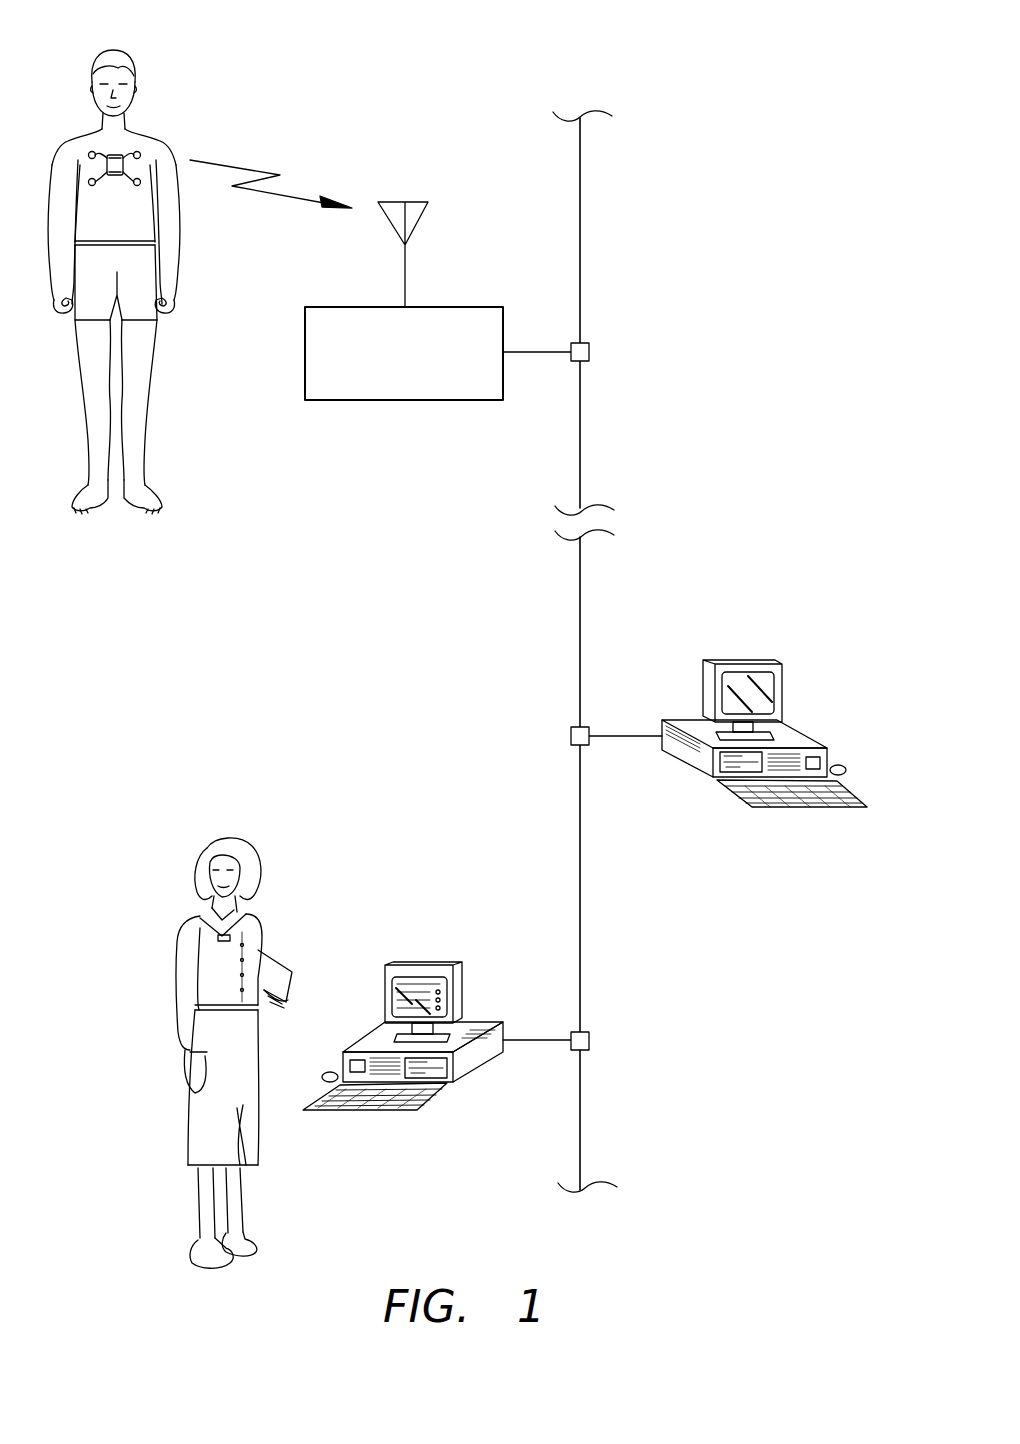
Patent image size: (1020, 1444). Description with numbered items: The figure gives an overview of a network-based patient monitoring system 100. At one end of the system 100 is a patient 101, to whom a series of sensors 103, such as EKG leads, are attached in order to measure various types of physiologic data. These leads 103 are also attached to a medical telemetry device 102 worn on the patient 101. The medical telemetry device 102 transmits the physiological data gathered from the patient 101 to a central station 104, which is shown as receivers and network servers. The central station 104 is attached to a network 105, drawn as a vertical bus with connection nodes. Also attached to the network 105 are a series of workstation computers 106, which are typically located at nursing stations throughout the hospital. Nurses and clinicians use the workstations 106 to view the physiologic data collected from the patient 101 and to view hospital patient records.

The network-based patient monitoring system 100 is at (378, 97).
The patient 101 is at (100, 56).
The medical telemetry device 102 is at (114, 155).
The sensors 103 is at (139, 154).
The central station 104 is at (430, 307).
The network 105 is at (581, 456).
The workstation computers 106 is at (411, 963).